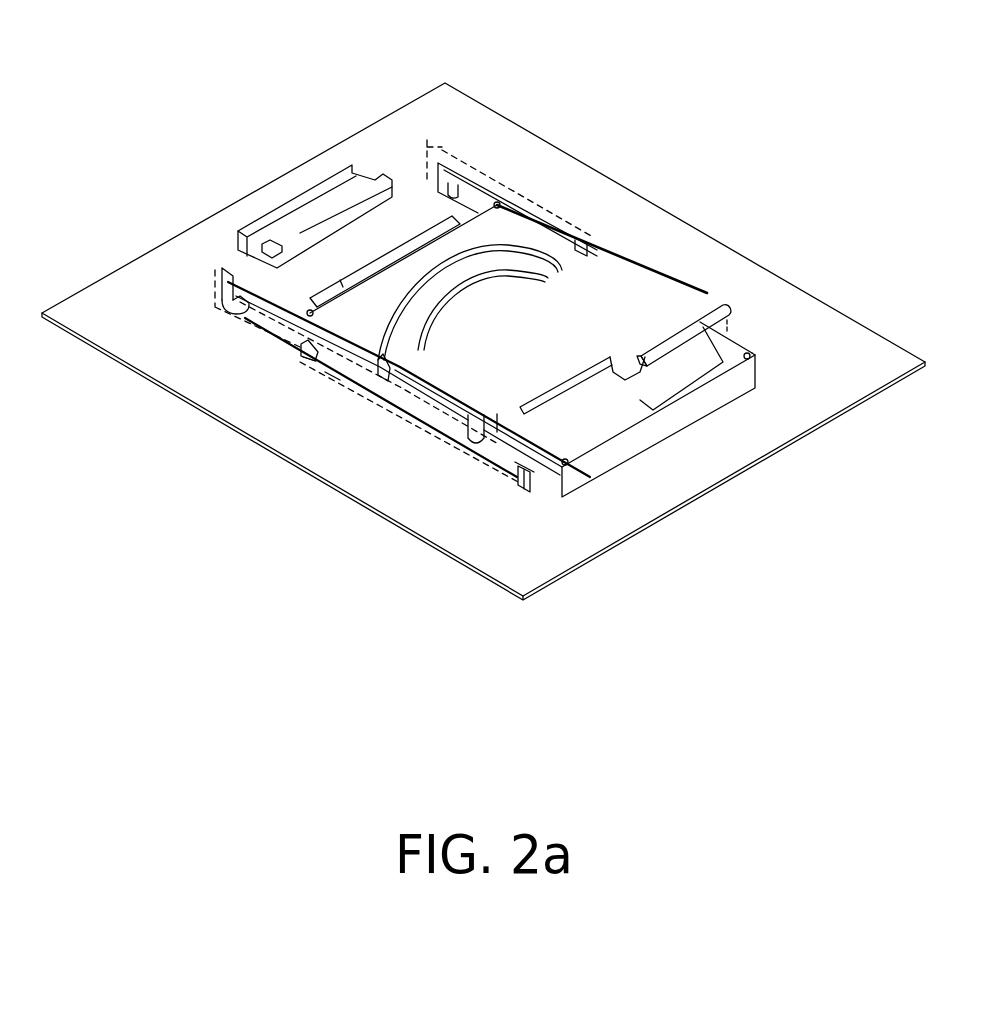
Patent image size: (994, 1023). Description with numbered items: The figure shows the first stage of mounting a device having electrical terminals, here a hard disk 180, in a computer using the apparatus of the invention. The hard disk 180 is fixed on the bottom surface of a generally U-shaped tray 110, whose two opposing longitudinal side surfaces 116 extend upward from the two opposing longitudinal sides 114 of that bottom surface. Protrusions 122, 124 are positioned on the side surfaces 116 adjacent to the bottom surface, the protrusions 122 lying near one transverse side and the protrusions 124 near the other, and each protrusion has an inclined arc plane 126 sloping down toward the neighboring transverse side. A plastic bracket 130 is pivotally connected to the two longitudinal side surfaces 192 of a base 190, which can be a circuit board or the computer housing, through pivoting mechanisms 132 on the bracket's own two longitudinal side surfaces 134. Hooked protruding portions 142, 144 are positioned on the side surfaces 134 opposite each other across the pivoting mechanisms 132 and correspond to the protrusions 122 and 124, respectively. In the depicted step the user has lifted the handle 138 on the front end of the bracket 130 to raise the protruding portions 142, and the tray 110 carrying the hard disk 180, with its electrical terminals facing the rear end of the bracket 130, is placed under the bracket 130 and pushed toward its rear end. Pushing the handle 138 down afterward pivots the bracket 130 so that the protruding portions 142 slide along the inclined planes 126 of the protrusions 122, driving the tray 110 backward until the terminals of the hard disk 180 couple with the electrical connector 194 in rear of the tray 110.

The tray 110 is at (767, 353).
The longitudinal sides 114 is at (333, 375).
The longitudinal side surfaces 116 is at (265, 335).
The protrusions 122 is at (533, 478).
The protrusions 124 is at (313, 355).
The inclined arc plane 126 is at (300, 347).
The plastic bracket 130 is at (637, 212).
The pivoting mechanisms 132 is at (377, 367).
The longitudinal side surfaces 134 is at (237, 275).
The handle 138 is at (685, 327).
The hooked protruding portions 142 is at (477, 443).
The hooked protruding portions 144 is at (240, 292).
The hard disk 180 is at (670, 380).
The base 190 is at (700, 520).
The longitudinal side surfaces 192 is at (435, 145).
The electrical connector 194 is at (327, 205).